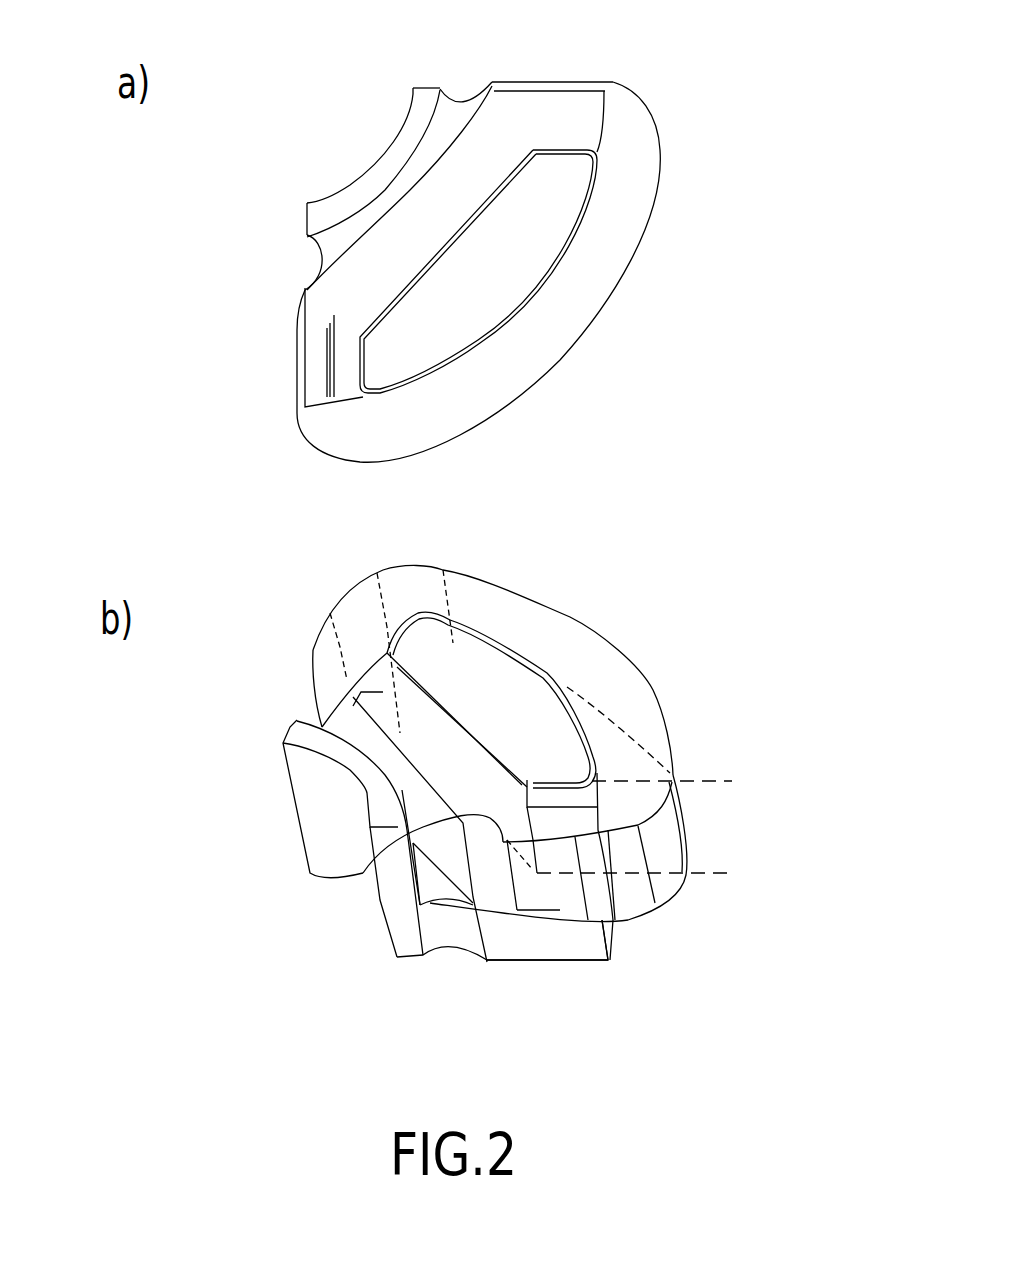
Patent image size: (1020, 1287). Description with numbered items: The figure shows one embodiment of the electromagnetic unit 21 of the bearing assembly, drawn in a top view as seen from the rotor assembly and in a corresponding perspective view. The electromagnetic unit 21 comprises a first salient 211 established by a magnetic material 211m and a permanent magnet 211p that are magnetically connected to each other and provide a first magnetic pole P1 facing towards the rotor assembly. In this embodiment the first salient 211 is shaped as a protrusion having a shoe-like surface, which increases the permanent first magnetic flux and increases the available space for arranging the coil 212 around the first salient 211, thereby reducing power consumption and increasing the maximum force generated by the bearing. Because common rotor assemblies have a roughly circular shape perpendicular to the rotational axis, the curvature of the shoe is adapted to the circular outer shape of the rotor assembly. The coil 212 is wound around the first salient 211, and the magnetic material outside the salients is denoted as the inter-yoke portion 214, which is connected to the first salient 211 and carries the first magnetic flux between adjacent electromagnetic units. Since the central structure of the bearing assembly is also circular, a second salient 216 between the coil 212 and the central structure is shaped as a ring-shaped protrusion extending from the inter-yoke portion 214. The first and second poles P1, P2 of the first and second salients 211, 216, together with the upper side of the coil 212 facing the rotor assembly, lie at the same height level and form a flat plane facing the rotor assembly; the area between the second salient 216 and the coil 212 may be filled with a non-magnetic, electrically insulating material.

The electromagnetic unit 21 is at (545, 397).
The coil 212 is at (595, 277).
The second salient 216 is at (351, 148).
The permanent magnet 211p is at (489, 320).
The first salient 211 is at (725, 783).
The magnetic material 211m is at (478, 782).
The inter-yoke portion 214 is at (615, 920).
The first magnetic pole P1 is at (559, 206).
The second pole P2 is at (408, 128).